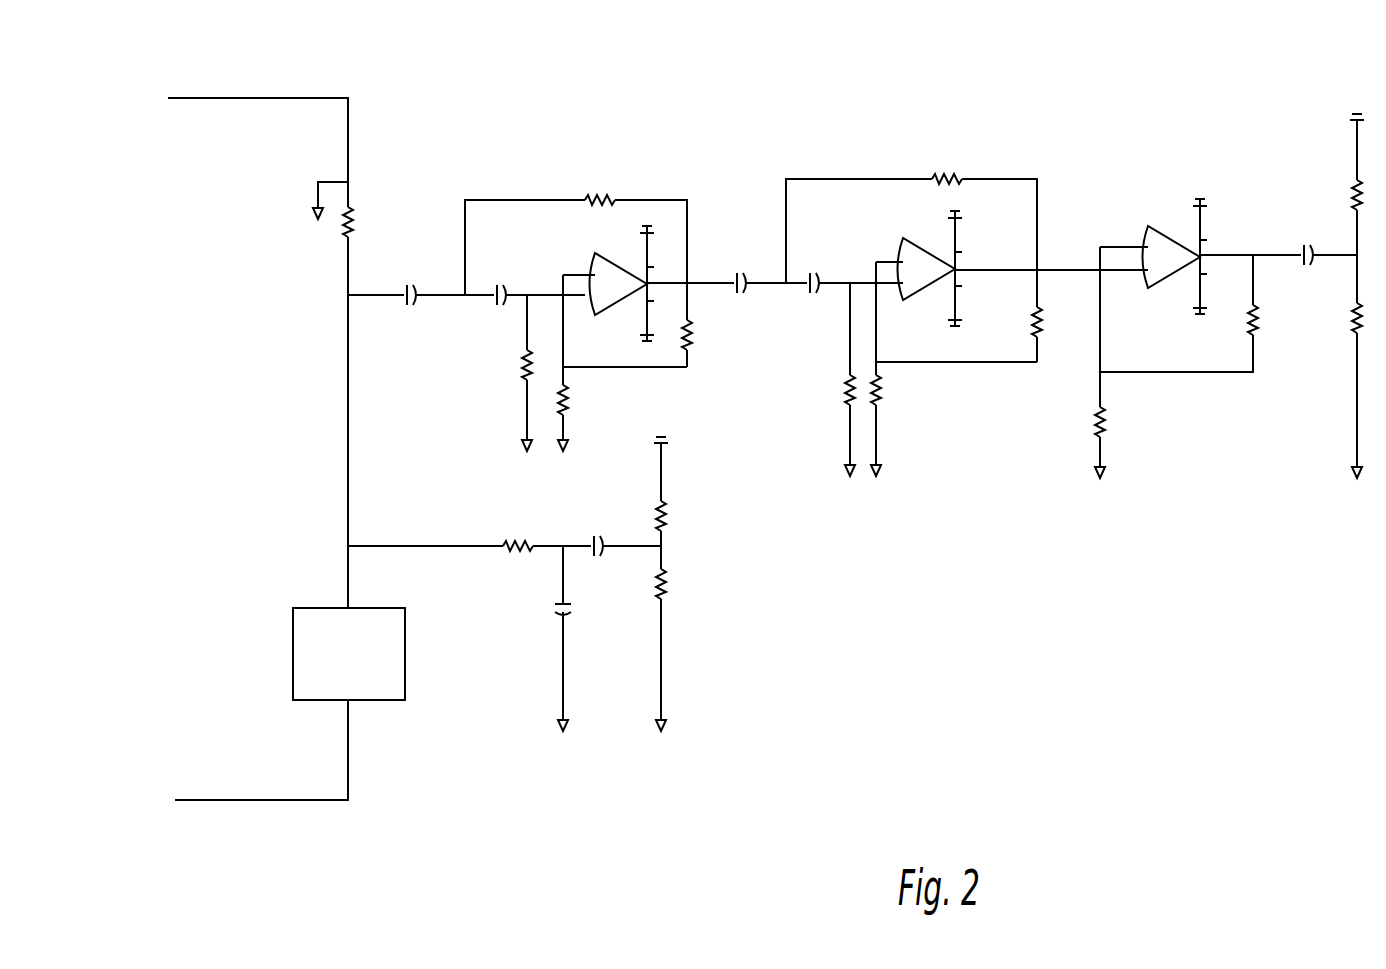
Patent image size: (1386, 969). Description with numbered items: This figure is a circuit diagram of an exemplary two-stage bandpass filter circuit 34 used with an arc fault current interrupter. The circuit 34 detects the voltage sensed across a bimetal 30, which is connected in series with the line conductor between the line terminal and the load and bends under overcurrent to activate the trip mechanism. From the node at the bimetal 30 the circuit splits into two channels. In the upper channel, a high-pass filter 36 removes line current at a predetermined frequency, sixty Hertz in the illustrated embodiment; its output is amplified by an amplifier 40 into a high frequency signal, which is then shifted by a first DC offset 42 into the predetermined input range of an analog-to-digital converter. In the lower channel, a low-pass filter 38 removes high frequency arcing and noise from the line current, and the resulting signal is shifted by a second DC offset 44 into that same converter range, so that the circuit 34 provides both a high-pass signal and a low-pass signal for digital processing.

The bimetal 30 is at (355, 204).
The two-stage bandpass filter circuit 34 is at (942, 640).
The high-pass filter 36 is at (1068, 180).
The low-pass filter 38 is at (595, 729).
The amplifier 40 is at (1278, 178).
The first DC offset 42 is at (1377, 480).
The second DC offset 44 is at (743, 729).